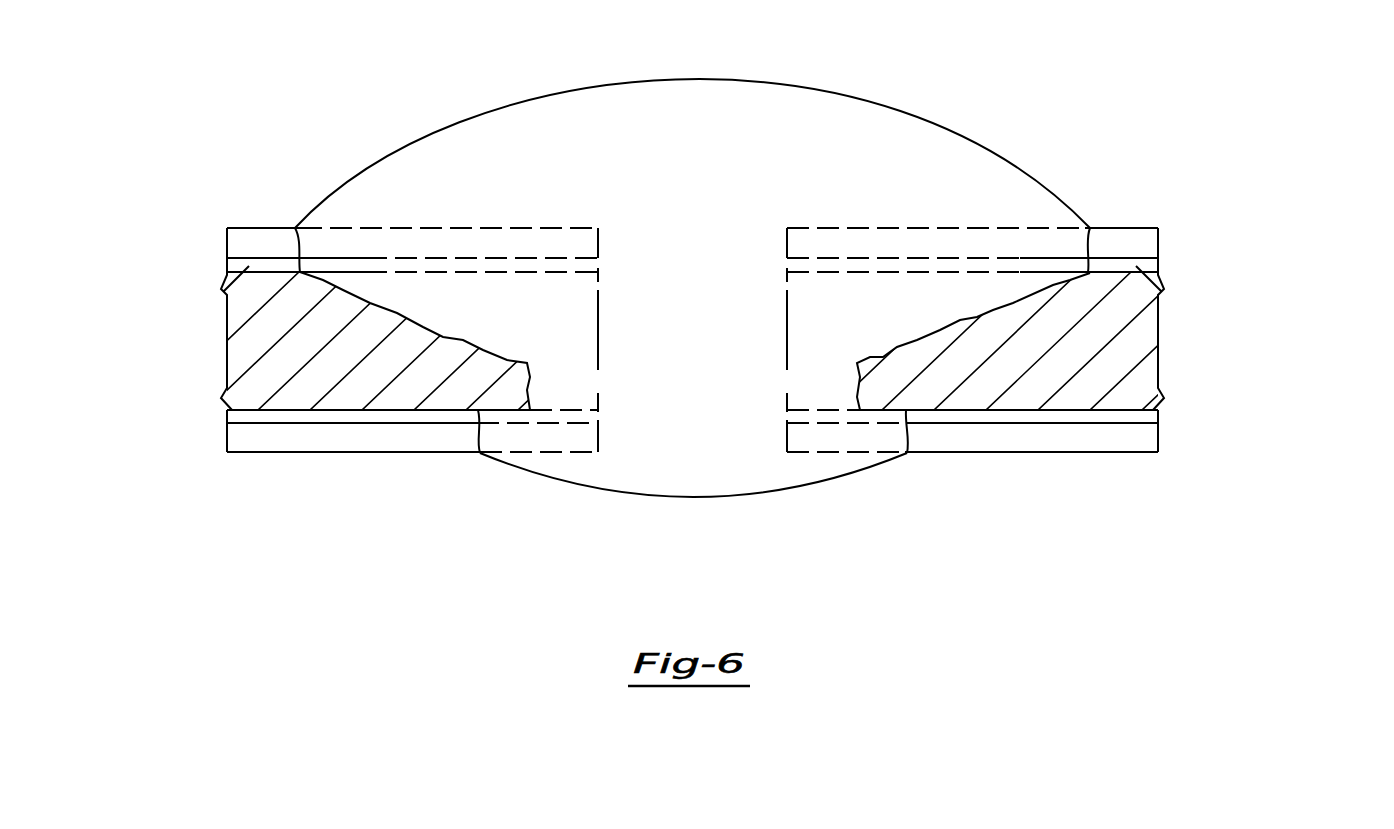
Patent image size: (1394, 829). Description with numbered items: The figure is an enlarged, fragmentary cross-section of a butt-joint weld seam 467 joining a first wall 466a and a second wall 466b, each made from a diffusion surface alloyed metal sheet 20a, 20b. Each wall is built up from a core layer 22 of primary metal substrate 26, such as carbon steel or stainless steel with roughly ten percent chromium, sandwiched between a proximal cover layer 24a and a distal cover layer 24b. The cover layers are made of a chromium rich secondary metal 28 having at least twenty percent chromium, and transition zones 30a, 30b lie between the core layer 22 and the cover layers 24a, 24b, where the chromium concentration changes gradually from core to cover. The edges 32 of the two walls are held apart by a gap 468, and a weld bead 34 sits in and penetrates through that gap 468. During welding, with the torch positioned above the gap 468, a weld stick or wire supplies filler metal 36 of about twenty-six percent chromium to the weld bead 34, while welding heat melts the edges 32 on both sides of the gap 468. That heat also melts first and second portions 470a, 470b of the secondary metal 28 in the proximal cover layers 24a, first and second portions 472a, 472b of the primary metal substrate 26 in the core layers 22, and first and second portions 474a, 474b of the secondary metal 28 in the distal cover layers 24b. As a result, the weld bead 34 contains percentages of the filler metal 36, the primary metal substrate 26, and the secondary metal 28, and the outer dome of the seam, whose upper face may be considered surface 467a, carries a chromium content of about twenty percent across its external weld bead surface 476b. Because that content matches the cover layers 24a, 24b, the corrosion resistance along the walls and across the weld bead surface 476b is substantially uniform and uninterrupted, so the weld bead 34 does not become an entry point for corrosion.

The weld seam 467 is at (692, 136).
The outer surface of dome 467a is at (618, 80).
The weld bead 34 is at (772, 112).
The filler metal 36 is at (907, 147).
The first panel 20a is at (243, 203).
The second panel 20b is at (1142, 203).
The proximal cover layer 24a is at (226, 246).
The distal cover layer 24b is at (226, 438).
The transition zone 30a is at (226, 269).
The transition zone 30b is at (226, 417).
The core layer 22 is at (226, 331).
The secondary metal 28 is at (267, 243).
The primary metal substrate 26 is at (383, 372).
The edge 32 is at (787, 325).
The gap 468 is at (786, 343).
The first wall 466a is at (200, 376).
The second wall 466b is at (1208, 377).
The first portion of secondary metal 470a is at (417, 243).
The second portion of secondary metal 470b is at (953, 243).
The first portion of primary metal substrate 472a is at (548, 335).
The second portion of primary metal substrate 472b is at (830, 342).
The first portion of secondary metal 474a is at (517, 440).
The second portion of secondary metal 474b is at (862, 440).
The external weld bead surface 476b is at (645, 497).